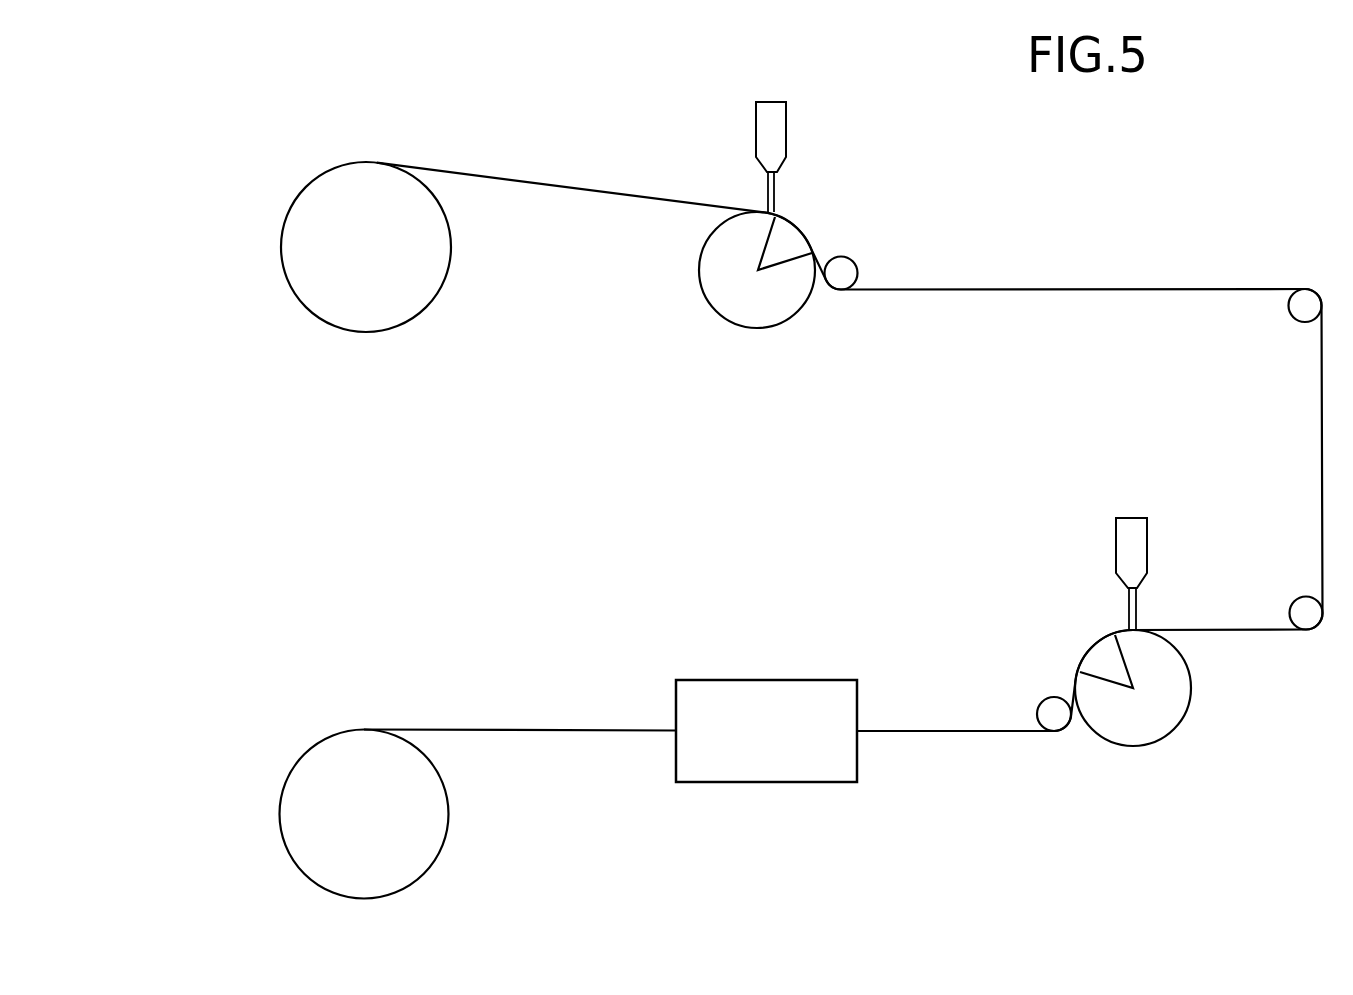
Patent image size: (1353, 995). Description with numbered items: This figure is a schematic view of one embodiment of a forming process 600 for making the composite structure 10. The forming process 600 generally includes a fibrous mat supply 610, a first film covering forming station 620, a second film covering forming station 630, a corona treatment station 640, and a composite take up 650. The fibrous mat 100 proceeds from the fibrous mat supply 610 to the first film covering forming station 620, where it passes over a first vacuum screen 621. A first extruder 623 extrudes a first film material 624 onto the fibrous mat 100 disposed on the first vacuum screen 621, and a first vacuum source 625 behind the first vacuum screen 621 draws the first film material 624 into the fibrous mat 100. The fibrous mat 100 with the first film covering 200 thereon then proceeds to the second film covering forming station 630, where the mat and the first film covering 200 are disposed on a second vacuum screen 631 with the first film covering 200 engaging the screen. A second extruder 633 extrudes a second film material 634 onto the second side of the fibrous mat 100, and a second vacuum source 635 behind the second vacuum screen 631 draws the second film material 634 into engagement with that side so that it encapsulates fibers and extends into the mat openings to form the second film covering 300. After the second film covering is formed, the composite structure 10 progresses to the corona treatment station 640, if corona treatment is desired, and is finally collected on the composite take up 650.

The forming process 600 is at (1143, 164).
The fibrous mat supply 610 is at (335, 312).
The fibrous mat 100 is at (510, 178).
The first film covering forming station 620 is at (856, 167).
The first vacuum screen 621 is at (722, 317).
The first extruder 623 is at (774, 101).
The first film material 624 is at (774, 197).
The first vacuum source 625 is at (782, 248).
The first film covering 200 is at (1128, 288).
The second film covering forming station 630 is at (1055, 605).
The second vacuum screen 631 is at (1185, 653).
The second extruder 633 is at (1143, 518).
The second film material 634 is at (1136, 605).
The second vacuum source 635 is at (1097, 658).
The second film covering 300 is at (925, 732).
The corona treatment station 640 is at (777, 680).
The composite structure 10 is at (477, 728).
The composite take up 650 is at (298, 787).